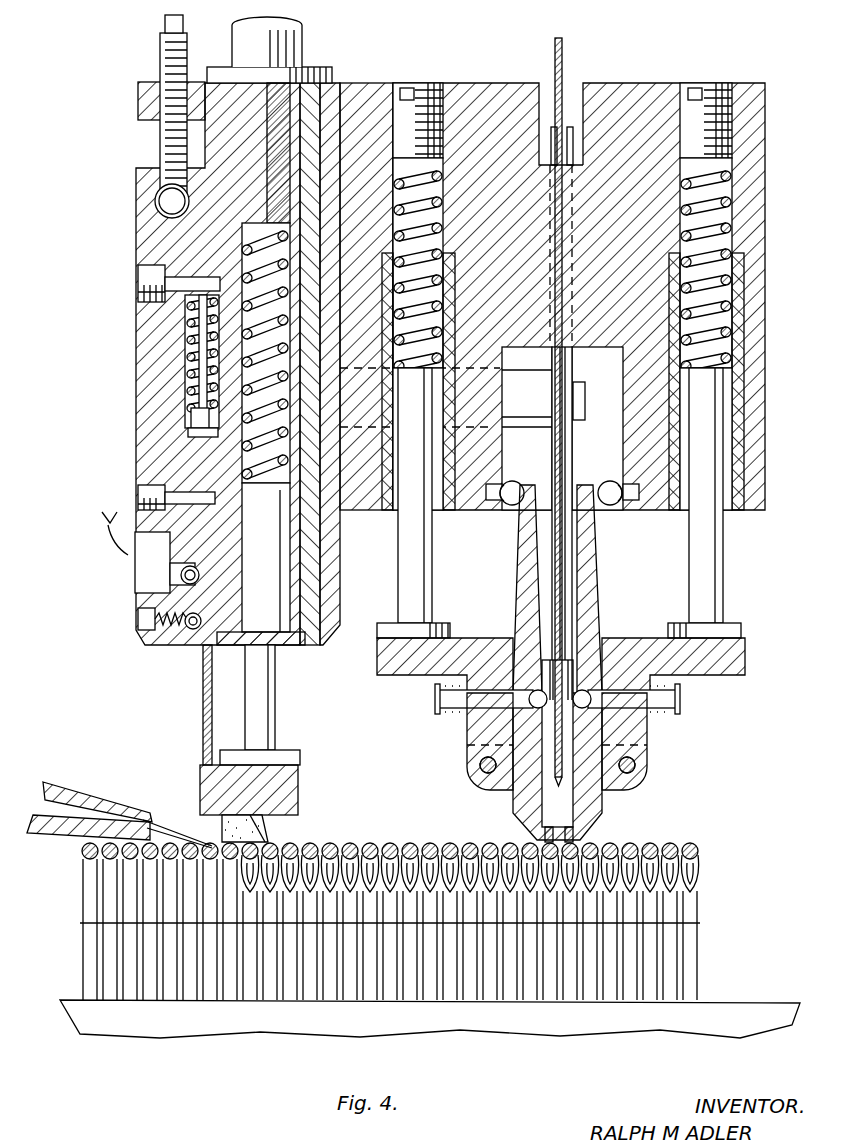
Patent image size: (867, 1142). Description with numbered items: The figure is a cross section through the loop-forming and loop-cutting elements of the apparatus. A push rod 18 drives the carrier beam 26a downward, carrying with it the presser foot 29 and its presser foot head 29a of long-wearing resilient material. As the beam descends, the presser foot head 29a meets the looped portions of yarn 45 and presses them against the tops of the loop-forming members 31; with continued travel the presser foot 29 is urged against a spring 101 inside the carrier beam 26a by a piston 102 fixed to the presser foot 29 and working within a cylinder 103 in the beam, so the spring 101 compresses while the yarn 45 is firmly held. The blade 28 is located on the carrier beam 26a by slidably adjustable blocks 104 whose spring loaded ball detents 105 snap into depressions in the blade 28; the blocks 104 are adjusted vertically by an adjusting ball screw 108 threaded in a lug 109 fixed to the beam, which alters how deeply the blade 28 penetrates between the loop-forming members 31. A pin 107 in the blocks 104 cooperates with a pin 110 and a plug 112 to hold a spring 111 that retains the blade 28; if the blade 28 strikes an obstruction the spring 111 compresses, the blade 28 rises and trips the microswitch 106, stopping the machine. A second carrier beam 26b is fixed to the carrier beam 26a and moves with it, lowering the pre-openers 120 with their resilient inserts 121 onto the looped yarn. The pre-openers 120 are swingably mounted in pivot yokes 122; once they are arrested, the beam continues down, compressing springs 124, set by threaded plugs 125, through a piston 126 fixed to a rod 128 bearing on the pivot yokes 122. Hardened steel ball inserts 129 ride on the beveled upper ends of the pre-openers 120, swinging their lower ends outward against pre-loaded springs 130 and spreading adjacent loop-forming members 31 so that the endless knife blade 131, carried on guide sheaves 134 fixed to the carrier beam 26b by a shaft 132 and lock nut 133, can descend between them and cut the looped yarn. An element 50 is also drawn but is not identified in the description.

The push rod 18 is at (290, 45).
The carrier beam 26a is at (336, 83).
The carrier beam 26b is at (642, 83).
The blade 28 is at (203, 715).
The presser foot 29 is at (298, 790).
The presser foot head 29a is at (262, 828).
The loop-forming members 31 is at (84, 853).
The looped portions of yarn 45 is at (165, 830).
The stripper blades 50 is at (105, 808).
The spring 101 is at (199, 358).
The piston 102 is at (280, 585).
The cylinder 103 is at (290, 225).
The slidably adjustable blocks 104 is at (138, 314).
The spring loaded ball detents 105 is at (193, 632).
The microswitch 106 is at (142, 578).
The pin 107 is at (165, 488).
The adjusting ball screw 108 is at (160, 152).
The lug 109 is at (138, 100).
The pin 110 is at (140, 268).
The spring 111 is at (185, 330).
The plug 112 is at (191, 430).
The pre-openers 120 is at (513, 822).
The resilient inserts 121 is at (580, 838).
The pivot yokes 122 is at (467, 765).
The springs 124 is at (708, 228).
The threaded plugs 125 is at (433, 83).
The piston 126 is at (388, 510).
The rod 128 is at (425, 585).
The hardened steel ball inserts 129 is at (516, 481).
The pre-loaded springs 130 is at (445, 715).
The knife blade 131 is at (563, 52).
The shaft 132 is at (523, 380).
The lock nut 133 is at (590, 380).
The guide sheaves 134 is at (568, 432).